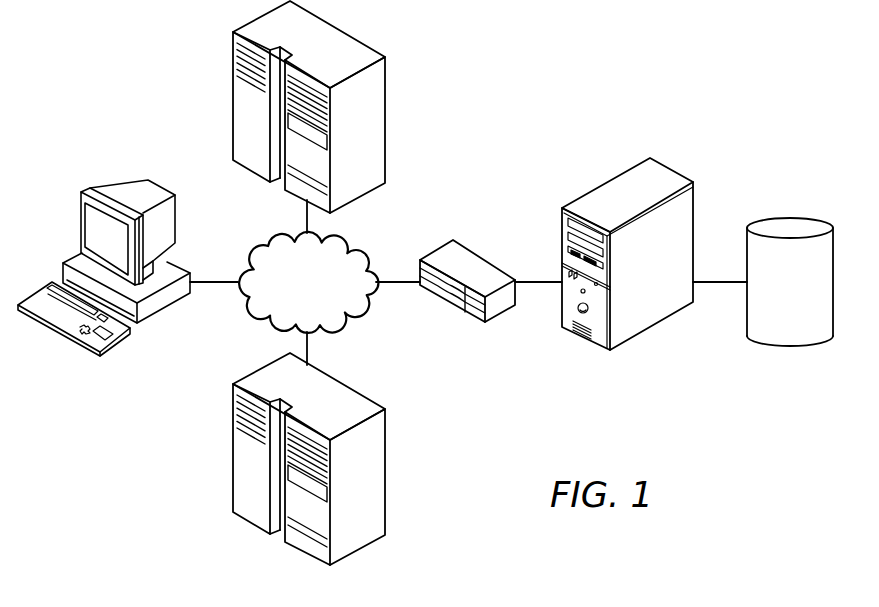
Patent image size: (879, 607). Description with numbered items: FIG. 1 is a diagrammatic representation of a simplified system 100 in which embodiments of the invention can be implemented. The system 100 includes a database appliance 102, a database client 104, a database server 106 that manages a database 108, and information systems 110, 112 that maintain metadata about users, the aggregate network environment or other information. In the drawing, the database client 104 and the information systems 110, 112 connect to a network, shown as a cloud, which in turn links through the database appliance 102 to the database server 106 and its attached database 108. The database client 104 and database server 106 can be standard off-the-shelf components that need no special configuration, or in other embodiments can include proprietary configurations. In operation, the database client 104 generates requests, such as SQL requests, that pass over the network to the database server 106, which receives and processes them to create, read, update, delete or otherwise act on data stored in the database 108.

The system 100 is at (581, 76).
The database appliance 102 is at (477, 262).
The database client 104 is at (138, 190).
The database server 106 is at (660, 177).
The database 108 is at (788, 215).
The information system 110 is at (233, 115).
The information system 112 is at (233, 469).